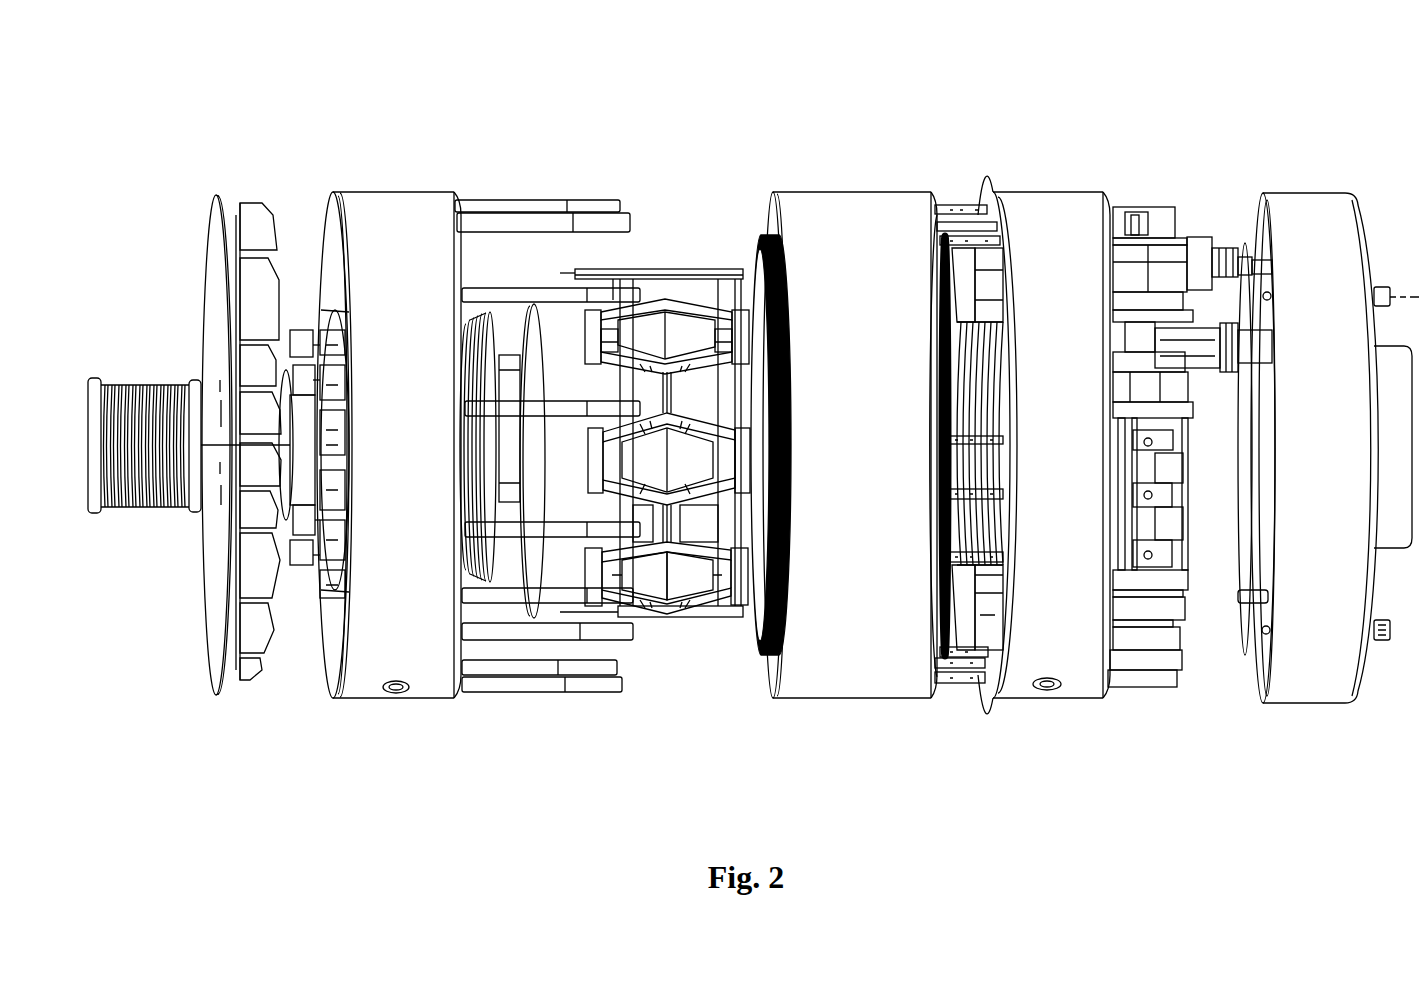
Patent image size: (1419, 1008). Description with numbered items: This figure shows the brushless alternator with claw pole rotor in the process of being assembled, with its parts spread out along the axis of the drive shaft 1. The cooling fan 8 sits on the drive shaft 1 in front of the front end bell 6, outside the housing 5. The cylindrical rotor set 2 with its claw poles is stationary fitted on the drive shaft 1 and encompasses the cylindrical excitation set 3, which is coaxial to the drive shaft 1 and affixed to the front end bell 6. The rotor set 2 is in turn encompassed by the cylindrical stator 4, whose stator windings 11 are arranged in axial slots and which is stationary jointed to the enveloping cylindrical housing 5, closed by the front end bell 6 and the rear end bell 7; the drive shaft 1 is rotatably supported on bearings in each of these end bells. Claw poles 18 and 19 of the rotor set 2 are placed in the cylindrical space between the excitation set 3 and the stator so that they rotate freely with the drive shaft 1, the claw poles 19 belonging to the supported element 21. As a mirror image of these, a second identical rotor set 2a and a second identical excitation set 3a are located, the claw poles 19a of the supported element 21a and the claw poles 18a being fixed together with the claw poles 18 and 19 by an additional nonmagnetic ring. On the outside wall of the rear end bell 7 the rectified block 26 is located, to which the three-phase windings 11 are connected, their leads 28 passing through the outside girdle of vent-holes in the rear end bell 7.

The drive shaft 1 is at (509, 425).
The rotor set 2 is at (664, 229).
The second rotor set 2a is at (690, 322).
The excitation set 3 is at (463, 341).
The second excitation set 3a is at (947, 355).
The stator 4 is at (783, 250).
The housing 5 is at (855, 222).
The front end bell 6 is at (389, 404).
The rear end bell 7 is at (1048, 238).
The cooling fan 8 is at (255, 410).
The stator windings 11 is at (748, 367).
The claw poles 18 is at (649, 652).
The claw poles 18a is at (673, 583).
The claw poles 19 is at (579, 637).
The claw poles 19a is at (685, 526).
The supported element 21 is at (587, 522).
The supported element 21a is at (743, 518).
The rectified block 26 is at (1151, 270).
The leads 28 is at (968, 217).